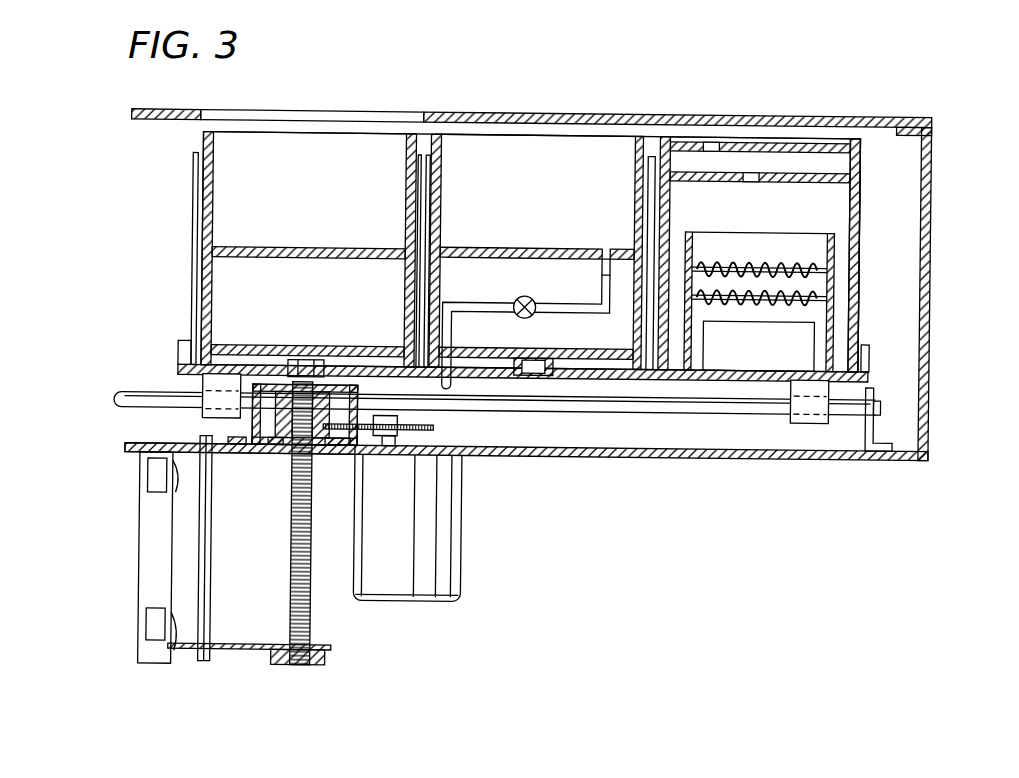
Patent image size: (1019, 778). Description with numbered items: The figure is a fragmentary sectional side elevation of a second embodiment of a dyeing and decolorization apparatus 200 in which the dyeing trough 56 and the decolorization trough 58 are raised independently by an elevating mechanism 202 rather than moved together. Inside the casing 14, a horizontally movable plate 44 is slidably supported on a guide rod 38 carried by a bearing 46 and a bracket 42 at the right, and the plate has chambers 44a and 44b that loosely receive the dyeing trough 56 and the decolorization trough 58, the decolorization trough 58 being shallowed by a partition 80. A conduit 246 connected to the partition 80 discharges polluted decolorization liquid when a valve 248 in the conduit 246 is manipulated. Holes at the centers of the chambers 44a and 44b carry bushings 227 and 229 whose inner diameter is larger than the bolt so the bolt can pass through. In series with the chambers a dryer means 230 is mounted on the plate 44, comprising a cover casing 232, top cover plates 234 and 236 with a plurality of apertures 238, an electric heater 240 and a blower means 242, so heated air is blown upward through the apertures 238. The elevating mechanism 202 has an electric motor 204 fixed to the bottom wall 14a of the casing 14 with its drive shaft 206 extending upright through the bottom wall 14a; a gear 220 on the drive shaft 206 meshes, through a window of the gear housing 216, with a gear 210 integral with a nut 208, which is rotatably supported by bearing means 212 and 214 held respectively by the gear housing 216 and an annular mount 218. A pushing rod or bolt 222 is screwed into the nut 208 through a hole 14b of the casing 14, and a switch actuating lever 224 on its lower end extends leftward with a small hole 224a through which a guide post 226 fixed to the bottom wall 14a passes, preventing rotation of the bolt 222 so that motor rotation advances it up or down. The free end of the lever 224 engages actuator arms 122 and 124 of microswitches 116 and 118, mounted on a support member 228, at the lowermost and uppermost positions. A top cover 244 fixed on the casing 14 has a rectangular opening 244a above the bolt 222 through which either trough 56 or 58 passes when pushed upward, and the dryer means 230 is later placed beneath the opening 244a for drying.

The casing 14 is at (934, 246).
The bottom wall 14a is at (680, 459).
The hole 14b is at (292, 455).
The guide rod 38 is at (686, 410).
The shaft support bracket 42 is at (880, 430).
The horizontally movable plate 44 is at (650, 378).
The chamber 44a is at (193, 153).
The chamber 44b is at (422, 160).
The bearing block 46 is at (204, 380).
The dyeing trough 56 is at (344, 136).
The decolorization trough 58 is at (565, 148).
The partition 80 is at (333, 247).
The microswitch 116 is at (153, 628).
The microswitch 118 is at (155, 478).
The actuator arm 122 is at (172, 650).
The actuator arm 124 is at (176, 480).
The dyeing and decolorization apparatus 200 is at (720, 106).
The elevating mechanism 202 is at (350, 458).
The electric motor 204 is at (450, 535).
The drive shaft 206 is at (360, 440).
The nut 208 is at (344, 400).
The gear 210 is at (340, 452).
The bearing means 212 is at (331, 386).
The bearing means 214 is at (285, 450).
The gear housing 216 is at (250, 418).
The annular mount 218 is at (270, 448).
The gear 220 is at (432, 425).
The pushing rod or bolt 222 is at (313, 610).
The switch actuating lever 224 is at (243, 643).
The small hole 224a is at (222, 655).
The guide post 226 is at (213, 550).
The bushing 227 is at (288, 358).
The support member 228 is at (142, 560).
The bushing 229 is at (524, 352).
The dryer means 230 is at (862, 206).
The cover casing 232 is at (862, 254).
The top cover plate 234 is at (780, 142).
The top cover plate 236 is at (798, 180).
The apertures 238 is at (704, 150).
The electric heater 240 is at (744, 290).
The blower means 242 is at (803, 338).
The top cover 244 is at (646, 112).
The rectangular opening 244a is at (254, 109).
The conduit 246 is at (563, 306).
The valve 248 is at (513, 300).